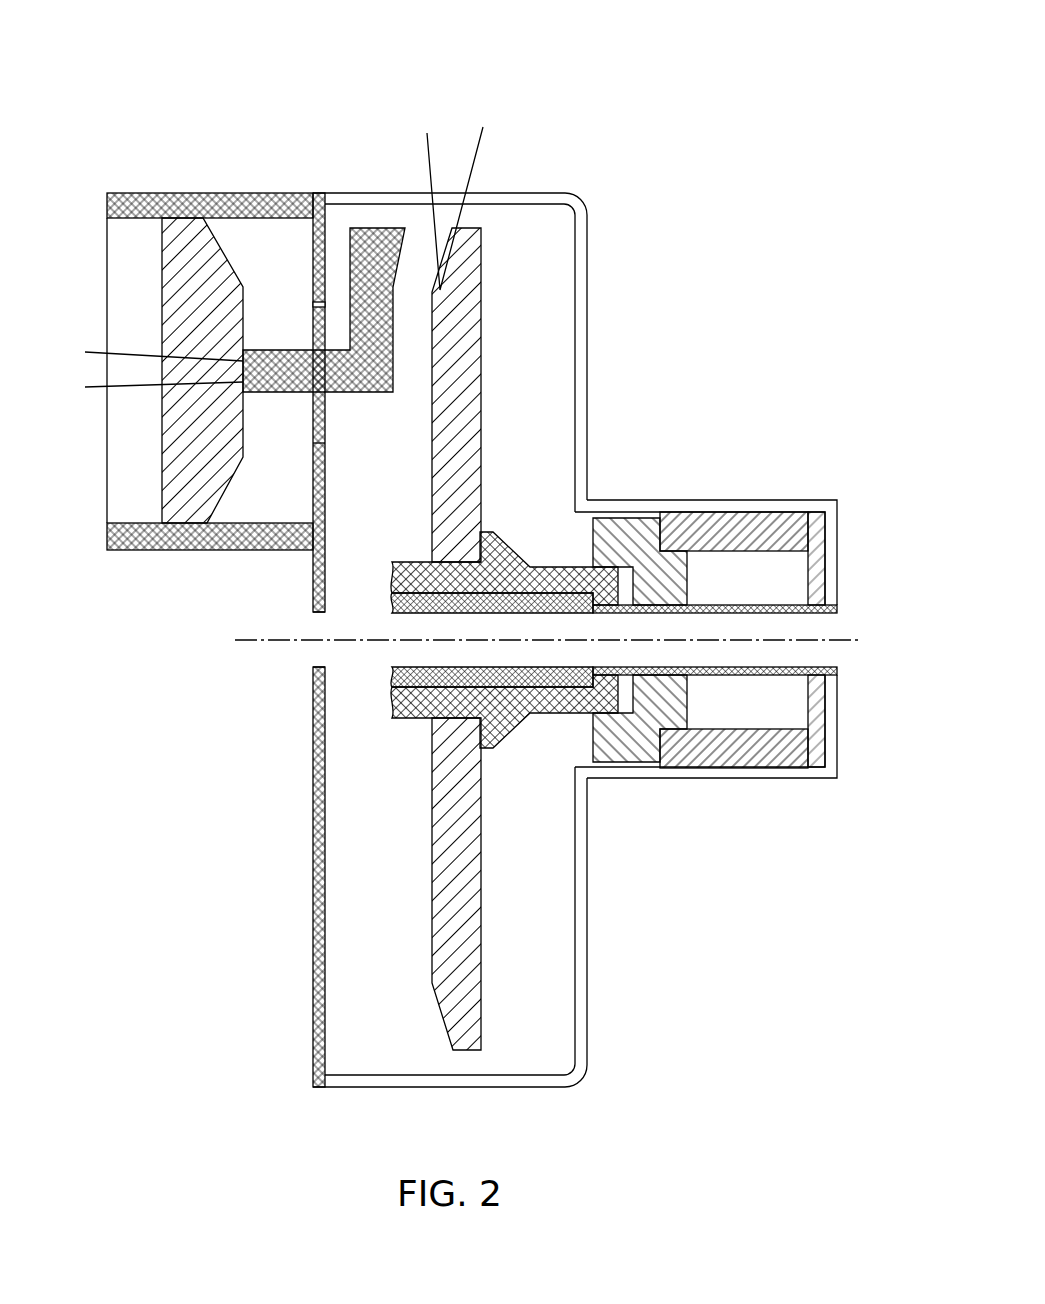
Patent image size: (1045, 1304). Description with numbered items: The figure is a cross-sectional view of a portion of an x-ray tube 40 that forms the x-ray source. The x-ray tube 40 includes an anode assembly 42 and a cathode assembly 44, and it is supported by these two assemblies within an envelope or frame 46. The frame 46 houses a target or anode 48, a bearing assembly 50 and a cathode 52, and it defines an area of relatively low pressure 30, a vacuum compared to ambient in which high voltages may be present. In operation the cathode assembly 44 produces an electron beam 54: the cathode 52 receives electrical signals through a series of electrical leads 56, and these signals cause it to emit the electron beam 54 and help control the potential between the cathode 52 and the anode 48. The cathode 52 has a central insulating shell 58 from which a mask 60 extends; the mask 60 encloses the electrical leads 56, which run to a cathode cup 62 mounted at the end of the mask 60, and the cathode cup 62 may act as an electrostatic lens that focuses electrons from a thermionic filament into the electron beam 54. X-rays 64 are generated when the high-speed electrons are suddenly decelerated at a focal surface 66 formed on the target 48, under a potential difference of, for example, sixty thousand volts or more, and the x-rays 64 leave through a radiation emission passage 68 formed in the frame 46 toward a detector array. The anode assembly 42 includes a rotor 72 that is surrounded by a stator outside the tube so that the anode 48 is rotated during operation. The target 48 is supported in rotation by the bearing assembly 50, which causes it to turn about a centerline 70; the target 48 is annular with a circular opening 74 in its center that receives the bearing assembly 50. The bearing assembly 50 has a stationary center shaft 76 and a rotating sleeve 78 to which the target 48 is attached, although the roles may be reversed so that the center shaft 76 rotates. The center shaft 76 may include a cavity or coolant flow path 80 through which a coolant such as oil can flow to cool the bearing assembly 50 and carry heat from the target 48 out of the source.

The area of relatively low pressure 30 is at (365, 1043).
The x-ray tube 40 is at (495, 78).
The anode assembly 42 is at (505, 310).
The cathode assembly 44 is at (270, 275).
The frame 46 is at (343, 1088).
The target 48 is at (485, 368).
The bearing assembly 50 is at (695, 704).
The cathode 52 is at (341, 313).
The electron beam 54 is at (428, 263).
The electrical leads 56 is at (134, 352).
The central insulating shell 58 is at (163, 226).
The mask 60 is at (345, 395).
The cathode cup 62 is at (381, 228).
The x-rays 64 is at (492, 147).
The focal surface 66 is at (426, 1005).
The radiation emission passage 68 is at (479, 194).
The centerline 70 is at (355, 633).
The rotor 72 is at (746, 500).
The circular opening 74 is at (423, 553).
The center shaft 76 is at (546, 662).
The sleeve 78 is at (561, 714).
The coolant flow path 80 is at (850, 625).